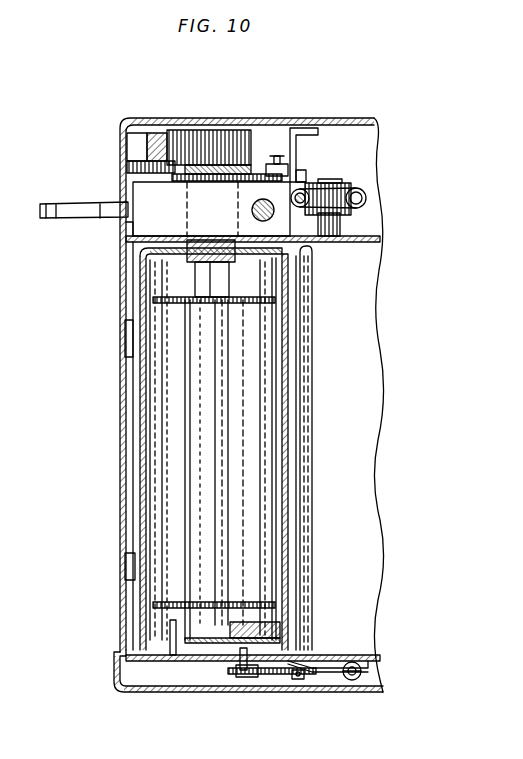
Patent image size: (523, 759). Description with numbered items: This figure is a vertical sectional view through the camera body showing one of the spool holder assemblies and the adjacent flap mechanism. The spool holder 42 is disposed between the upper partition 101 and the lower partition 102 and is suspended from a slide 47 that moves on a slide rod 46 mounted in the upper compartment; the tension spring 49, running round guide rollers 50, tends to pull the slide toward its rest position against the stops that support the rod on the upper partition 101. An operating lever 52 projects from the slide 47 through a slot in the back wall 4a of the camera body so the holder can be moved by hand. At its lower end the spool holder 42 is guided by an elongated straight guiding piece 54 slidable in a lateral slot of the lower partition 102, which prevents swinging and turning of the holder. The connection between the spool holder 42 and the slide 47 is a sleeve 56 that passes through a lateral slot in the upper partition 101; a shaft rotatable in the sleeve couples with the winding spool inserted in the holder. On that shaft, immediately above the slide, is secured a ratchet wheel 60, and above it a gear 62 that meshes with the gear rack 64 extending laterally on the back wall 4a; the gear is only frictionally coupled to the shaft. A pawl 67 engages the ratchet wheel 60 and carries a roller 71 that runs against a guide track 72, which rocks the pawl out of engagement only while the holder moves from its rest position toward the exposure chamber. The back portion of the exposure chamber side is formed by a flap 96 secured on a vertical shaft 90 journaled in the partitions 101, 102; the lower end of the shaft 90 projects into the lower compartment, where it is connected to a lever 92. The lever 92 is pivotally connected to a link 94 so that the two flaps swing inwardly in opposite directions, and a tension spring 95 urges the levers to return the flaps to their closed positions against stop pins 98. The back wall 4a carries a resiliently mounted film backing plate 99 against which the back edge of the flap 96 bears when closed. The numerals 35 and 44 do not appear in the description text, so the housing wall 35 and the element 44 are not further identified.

The housing 35 is at (123, 479).
The upper partition 101 is at (370, 240).
The lower partition 102 is at (345, 657).
The guide rollers 50 is at (343, 183).
The tension spring 49 is at (368, 198).
The guide track 72 is at (298, 150).
The pawl 67 is at (288, 162).
The roller 71 is at (306, 174).
The gear rack 64 is at (158, 134).
The gear 62 is at (245, 130).
The ratchet wheel 60 is at (142, 184).
The slide rod 46 is at (252, 210).
The operating lever 52 is at (62, 219).
The slide 47 is at (126, 232).
The vertical shaft 90 is at (290, 334).
The flap 96 is at (150, 282).
The film backing plate 99 is at (140, 389).
The spool holder 42 is at (282, 405).
The piston 44 is at (222, 450).
The sleeve 56 is at (192, 260).
The stop pin 98 is at (150, 647).
The guiding piece 54 is at (240, 655).
The link 94 is at (244, 680).
The lever 92 is at (310, 686).
The tension spring 95 is at (363, 671).
The back wall 4a is at (98, 360).